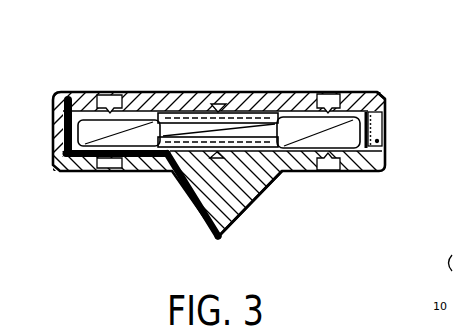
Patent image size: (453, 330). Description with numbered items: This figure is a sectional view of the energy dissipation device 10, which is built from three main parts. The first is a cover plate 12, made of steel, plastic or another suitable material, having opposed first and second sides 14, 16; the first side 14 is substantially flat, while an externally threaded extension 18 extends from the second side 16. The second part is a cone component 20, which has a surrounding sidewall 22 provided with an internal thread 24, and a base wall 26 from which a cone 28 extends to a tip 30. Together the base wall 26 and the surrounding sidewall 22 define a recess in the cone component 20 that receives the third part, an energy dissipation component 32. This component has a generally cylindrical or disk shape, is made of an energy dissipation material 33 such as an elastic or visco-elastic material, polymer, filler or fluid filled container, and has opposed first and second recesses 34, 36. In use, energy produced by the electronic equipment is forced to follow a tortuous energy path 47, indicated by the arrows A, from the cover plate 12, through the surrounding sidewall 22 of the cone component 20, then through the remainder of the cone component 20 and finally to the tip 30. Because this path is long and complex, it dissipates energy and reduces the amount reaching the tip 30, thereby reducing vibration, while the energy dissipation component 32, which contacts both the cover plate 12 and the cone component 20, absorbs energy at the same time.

The energy dissipation device 10 is at (390, 98).
The cover plate 12 is at (183, 91).
The first side 14 is at (136, 91).
The second side 16 is at (67, 97).
The externally threaded extension 18 is at (384, 123).
The cone component 20 is at (168, 190).
The surrounding sidewall 22 is at (379, 142).
The internal thread 24 is at (82, 91).
The base wall 26 is at (82, 172).
The cone 28 is at (262, 198).
The tip 30 is at (222, 234).
The energy dissipation component 32 is at (363, 99).
The energy dissipation material 33 is at (322, 93).
The first recess 34 is at (228, 112).
The second recess 36 is at (155, 173).
The tortuous energy path 47 is at (200, 221).
The arrows A is at (173, 193).